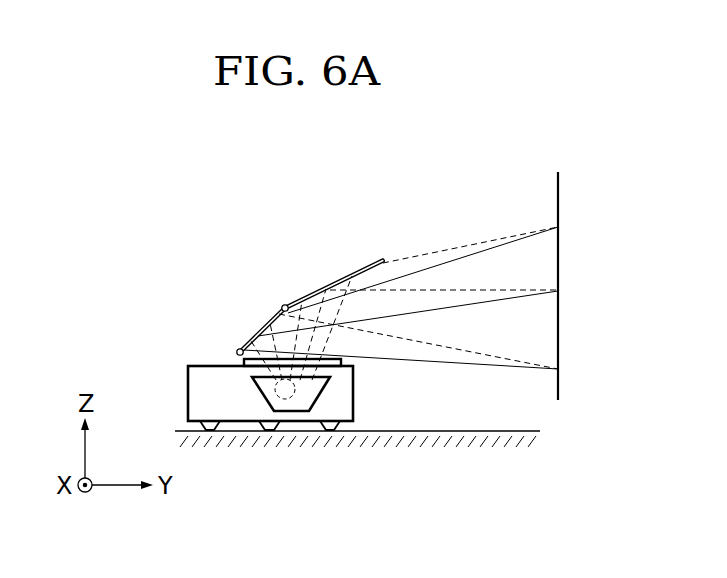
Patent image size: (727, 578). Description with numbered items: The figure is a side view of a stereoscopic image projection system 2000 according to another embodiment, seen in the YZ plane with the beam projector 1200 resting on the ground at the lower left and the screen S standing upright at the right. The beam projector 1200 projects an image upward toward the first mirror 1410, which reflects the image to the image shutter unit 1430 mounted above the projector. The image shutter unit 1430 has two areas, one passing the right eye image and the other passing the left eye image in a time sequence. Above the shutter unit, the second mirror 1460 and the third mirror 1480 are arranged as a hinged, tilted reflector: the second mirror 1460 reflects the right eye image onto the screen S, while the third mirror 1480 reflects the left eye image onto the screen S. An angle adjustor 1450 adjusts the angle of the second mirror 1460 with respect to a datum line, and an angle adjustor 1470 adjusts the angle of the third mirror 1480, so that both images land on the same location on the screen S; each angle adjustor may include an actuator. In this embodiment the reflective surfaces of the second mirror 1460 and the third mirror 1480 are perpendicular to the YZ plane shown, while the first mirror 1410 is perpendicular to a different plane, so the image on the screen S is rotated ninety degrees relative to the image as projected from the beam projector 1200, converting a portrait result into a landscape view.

The stereoscopic image projection system 2000 is at (177, 222).
The beam projector 1200 is at (188, 393).
The first mirror 1410 is at (320, 393).
The image shutter unit 1430 is at (343, 361).
The angle adjustor 1450 is at (237, 351).
The second mirror 1460 is at (262, 331).
The angle adjustor 1470 is at (283, 305).
The third mirror 1480 is at (352, 274).
The screen S is at (556, 196).